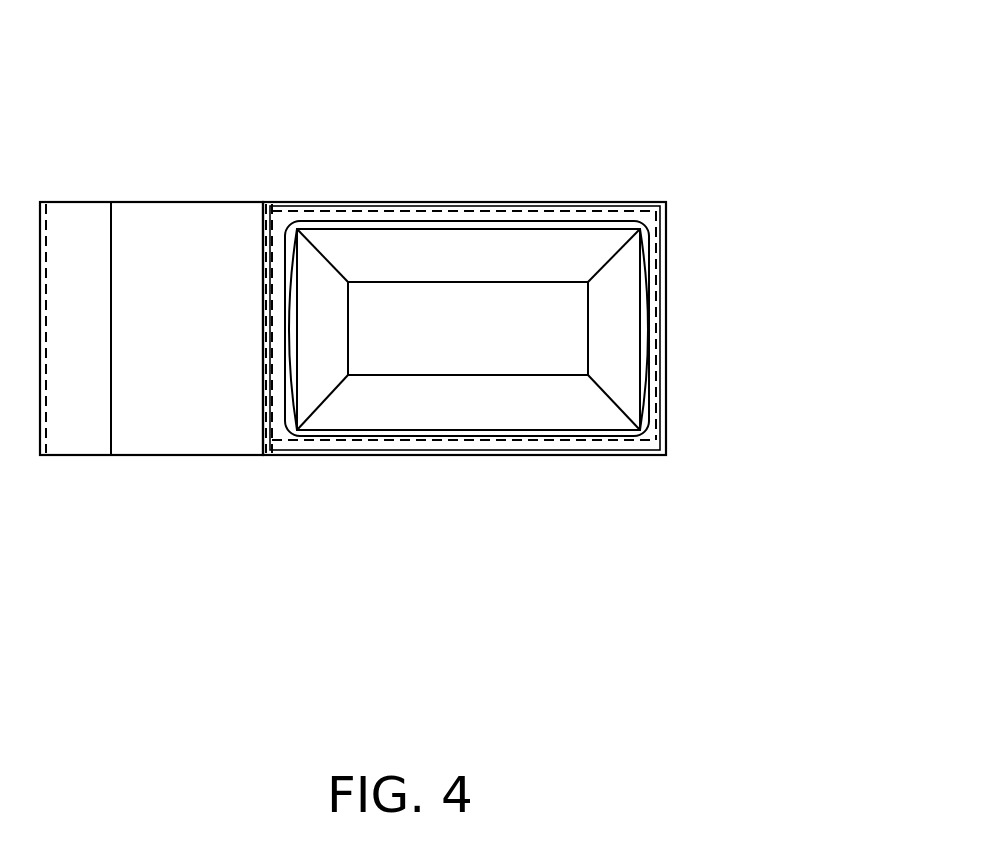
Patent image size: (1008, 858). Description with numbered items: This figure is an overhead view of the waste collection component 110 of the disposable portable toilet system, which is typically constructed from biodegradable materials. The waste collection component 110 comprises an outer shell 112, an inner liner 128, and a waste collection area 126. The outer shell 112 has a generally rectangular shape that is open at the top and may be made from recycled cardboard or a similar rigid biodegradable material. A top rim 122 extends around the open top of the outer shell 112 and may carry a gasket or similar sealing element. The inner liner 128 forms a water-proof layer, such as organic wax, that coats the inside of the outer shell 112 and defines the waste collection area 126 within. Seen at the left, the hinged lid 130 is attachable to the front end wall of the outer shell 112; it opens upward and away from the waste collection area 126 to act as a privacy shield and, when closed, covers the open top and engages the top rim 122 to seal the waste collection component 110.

The waste collection component 110 is at (712, 296).
The outer shell 112 is at (562, 190).
The top rim 122 is at (604, 216).
The waste collection area 126 is at (480, 388).
The inner liner 128 is at (480, 273).
The hinged lid 130 is at (166, 181).